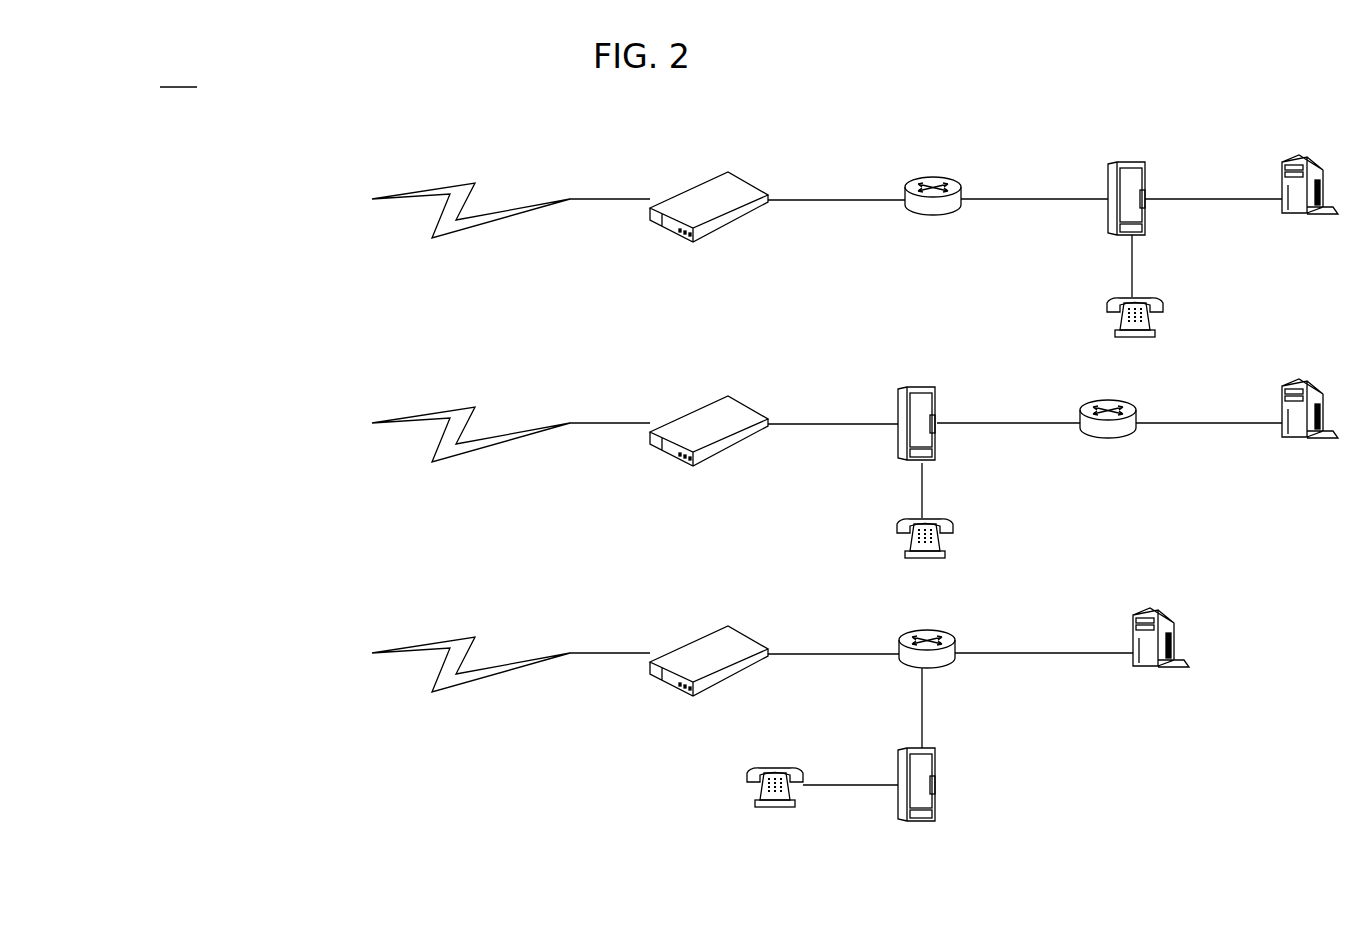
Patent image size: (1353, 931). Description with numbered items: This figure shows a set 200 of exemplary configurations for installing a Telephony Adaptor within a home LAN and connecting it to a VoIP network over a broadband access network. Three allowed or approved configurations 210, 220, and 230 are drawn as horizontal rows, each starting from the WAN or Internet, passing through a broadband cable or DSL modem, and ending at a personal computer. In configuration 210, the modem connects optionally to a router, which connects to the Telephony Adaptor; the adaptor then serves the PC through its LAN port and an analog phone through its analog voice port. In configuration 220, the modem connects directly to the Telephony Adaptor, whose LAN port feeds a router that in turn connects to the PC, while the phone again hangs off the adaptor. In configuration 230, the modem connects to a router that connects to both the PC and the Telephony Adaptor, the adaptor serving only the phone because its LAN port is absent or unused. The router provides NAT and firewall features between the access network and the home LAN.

The set of exemplary configurations 200 is at (178, 74).
The configuration 210 is at (818, 230).
The configuration 220 is at (818, 455).
The configuration 230 is at (743, 720).